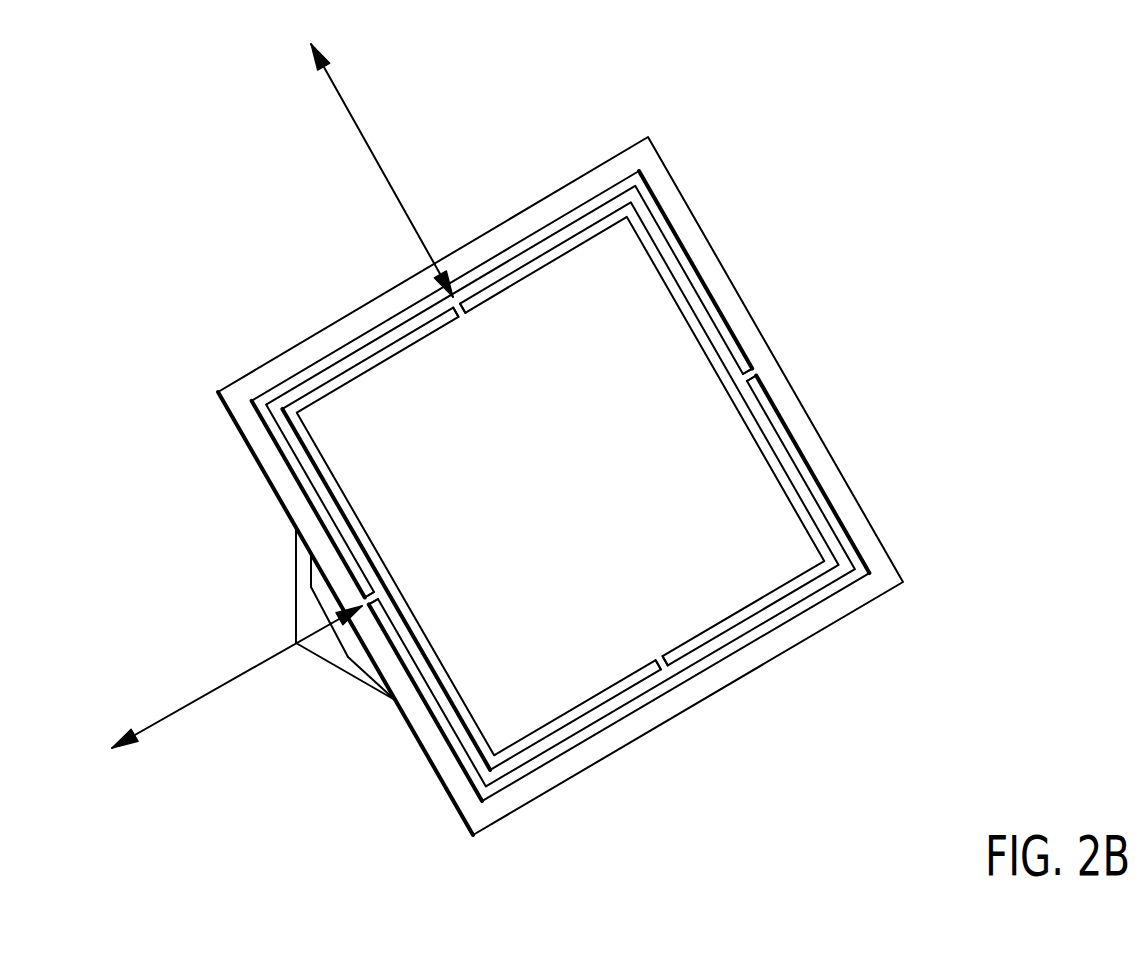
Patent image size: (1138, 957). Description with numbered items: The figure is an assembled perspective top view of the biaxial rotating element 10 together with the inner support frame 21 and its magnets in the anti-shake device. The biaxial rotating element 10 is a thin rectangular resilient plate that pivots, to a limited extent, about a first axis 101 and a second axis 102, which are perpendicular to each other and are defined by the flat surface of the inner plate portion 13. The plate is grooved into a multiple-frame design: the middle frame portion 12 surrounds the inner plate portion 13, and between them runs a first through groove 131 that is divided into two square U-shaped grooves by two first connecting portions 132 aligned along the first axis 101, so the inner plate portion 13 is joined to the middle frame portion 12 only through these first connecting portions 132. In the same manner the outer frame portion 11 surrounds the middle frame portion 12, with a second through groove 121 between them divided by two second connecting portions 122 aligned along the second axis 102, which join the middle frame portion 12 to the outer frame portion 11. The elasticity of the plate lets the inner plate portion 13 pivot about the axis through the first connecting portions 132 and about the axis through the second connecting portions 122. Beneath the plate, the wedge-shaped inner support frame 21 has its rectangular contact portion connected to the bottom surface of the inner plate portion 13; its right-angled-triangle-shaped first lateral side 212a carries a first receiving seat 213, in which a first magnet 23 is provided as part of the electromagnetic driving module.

The biaxial rotating element 10 is at (564, 450).
The outer frame portion 11 is at (858, 602).
The middle frame portion 12 is at (578, 497).
The second through groove 121 is at (483, 270).
The second connecting portion 122 is at (750, 375).
The inner plate portion 13 is at (569, 459).
The first through groove 131 is at (531, 268).
The first connecting portion 132 is at (453, 313).
The inner support frame 21 is at (251, 624).
The first lateral side 212a is at (311, 588).
The first receiving seat 213 is at (311, 557).
The first magnet 23 is at (323, 597).
The first axis 101 is at (342, 101).
The second axis 102 is at (184, 708).